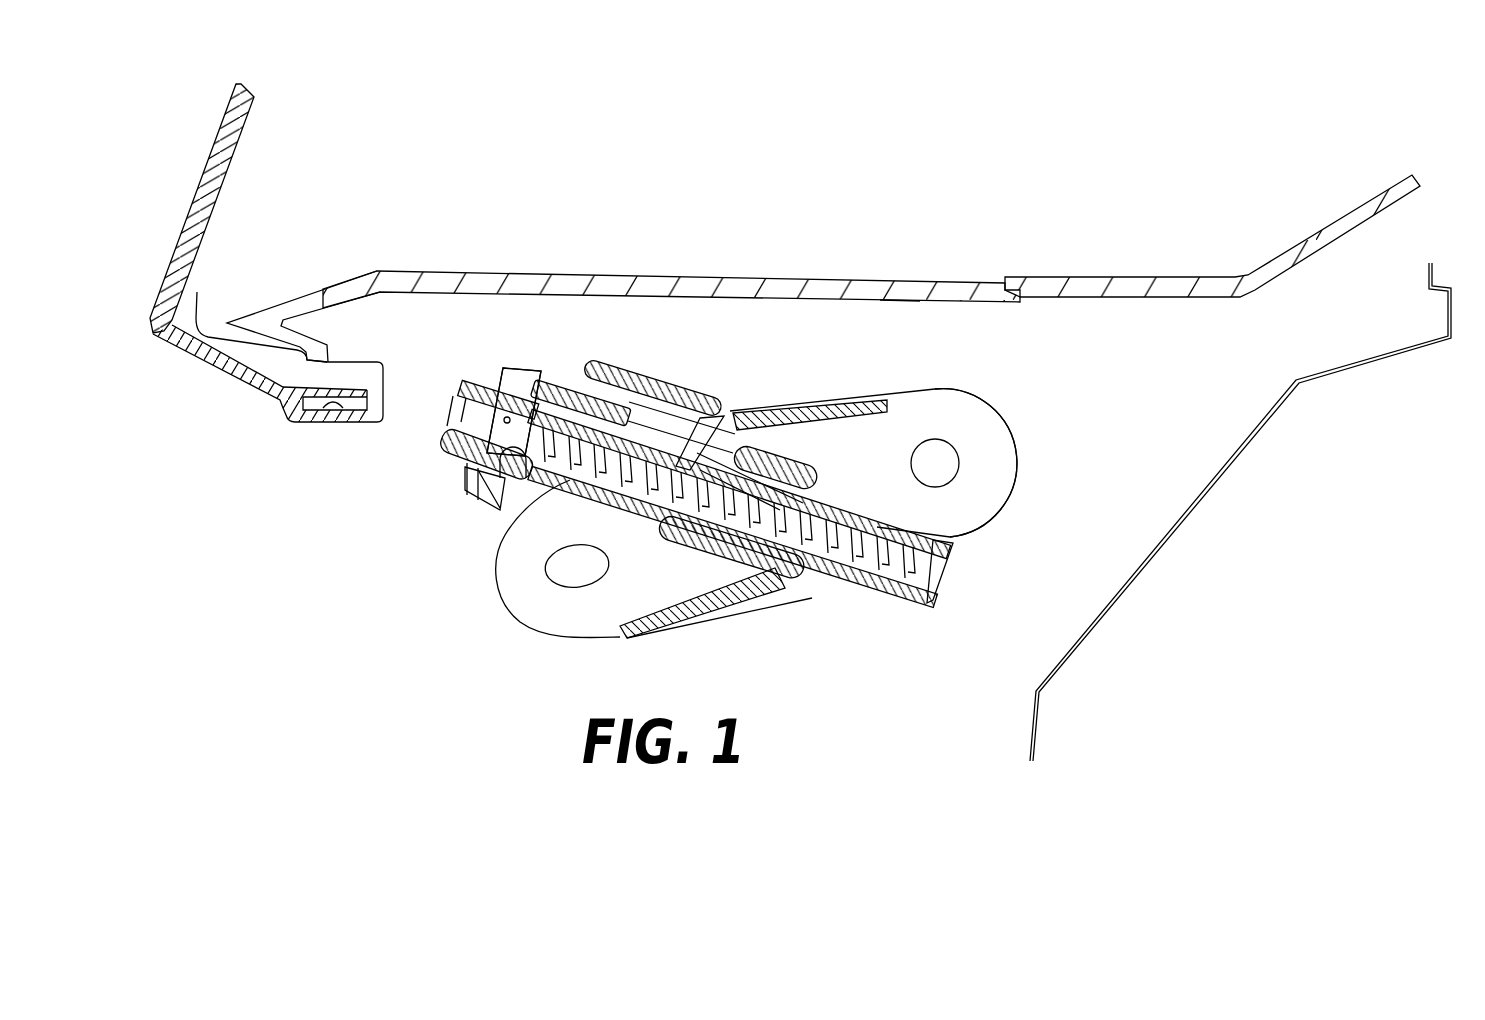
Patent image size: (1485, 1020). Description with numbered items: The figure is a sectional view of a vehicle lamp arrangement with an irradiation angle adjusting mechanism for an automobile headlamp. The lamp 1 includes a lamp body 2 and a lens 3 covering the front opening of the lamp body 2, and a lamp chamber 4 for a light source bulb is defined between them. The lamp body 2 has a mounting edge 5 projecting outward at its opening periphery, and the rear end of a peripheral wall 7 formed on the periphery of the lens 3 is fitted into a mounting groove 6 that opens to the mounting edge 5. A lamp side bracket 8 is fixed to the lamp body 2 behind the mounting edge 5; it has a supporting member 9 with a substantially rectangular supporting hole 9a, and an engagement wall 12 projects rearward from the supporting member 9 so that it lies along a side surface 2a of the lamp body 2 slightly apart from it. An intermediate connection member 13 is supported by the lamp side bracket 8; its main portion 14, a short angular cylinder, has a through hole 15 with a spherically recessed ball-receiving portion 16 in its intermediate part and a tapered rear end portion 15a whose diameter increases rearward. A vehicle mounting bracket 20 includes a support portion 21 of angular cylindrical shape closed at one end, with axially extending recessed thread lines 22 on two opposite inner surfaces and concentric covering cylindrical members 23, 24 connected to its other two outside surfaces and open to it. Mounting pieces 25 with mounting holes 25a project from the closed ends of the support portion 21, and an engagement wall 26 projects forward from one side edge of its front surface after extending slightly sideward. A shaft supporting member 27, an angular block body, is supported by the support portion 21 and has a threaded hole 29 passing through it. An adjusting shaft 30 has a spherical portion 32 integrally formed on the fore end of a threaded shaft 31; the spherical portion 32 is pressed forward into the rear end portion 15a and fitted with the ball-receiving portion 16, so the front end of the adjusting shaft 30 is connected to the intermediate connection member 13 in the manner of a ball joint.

The lamp 1 is at (1378, 220).
The lamp body 2 is at (1128, 282).
The side surface 2a is at (896, 301).
The lens 3 is at (226, 128).
The lamp chamber 4 is at (841, 215).
The mounting edge 5 is at (390, 396).
The mounting groove 6 is at (330, 400).
The peripheral wall 7 is at (197, 317).
The lamp side bracket 8 is at (505, 350).
The supporting member 9 is at (520, 480).
The supporting hole 9a is at (525, 483).
The engagement wall 12 is at (592, 378).
The intermediate connection member 13 is at (470, 385).
The main portion 14 is at (545, 372).
The through hole 15 is at (443, 423).
The rear end portion 15a is at (568, 470).
The ball-receiving portion 16 is at (517, 478).
The vehicle mounting bracket 20 is at (1017, 465).
The support portion 21 is at (800, 450).
The recessed thread lines 22 is at (740, 428).
The covering cylindrical member 23 is at (622, 512).
The covering cylindrical member 24 is at (905, 590).
The mounting pieces 25 is at (992, 428).
The mounting holes 25a is at (943, 473).
The engagement wall 26 is at (638, 370).
The shaft supporting member 27 is at (792, 585).
The threaded hole 29 is at (805, 488).
The adjusting shaft 30 is at (950, 563).
The threaded shaft 31 is at (660, 518).
The spherical portion 32 is at (507, 417).